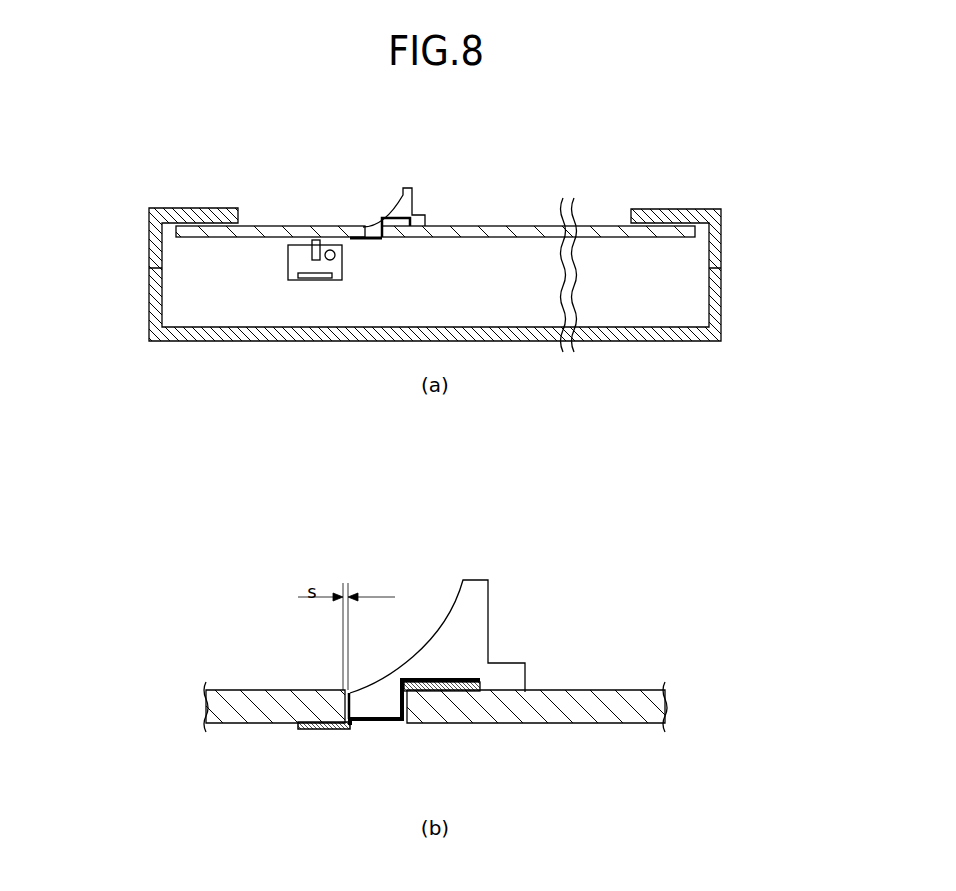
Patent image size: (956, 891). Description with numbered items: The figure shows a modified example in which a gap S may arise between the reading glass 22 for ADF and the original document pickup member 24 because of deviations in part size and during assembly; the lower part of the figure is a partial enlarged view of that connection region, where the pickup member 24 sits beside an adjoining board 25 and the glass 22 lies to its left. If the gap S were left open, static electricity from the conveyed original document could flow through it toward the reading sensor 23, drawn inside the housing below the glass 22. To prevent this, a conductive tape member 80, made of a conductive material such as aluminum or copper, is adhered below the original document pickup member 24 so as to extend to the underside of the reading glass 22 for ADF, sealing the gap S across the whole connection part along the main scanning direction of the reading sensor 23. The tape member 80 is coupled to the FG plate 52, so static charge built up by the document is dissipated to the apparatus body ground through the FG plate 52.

The reading glass for ADF 22 is at (278, 226).
The reading sensor 23 is at (287, 263).
The original document pickup member 24 is at (408, 186).
The second circuit board 25 is at (508, 222).
The FG plate 52 is at (468, 700).
The conductive tape member 80 is at (358, 238).